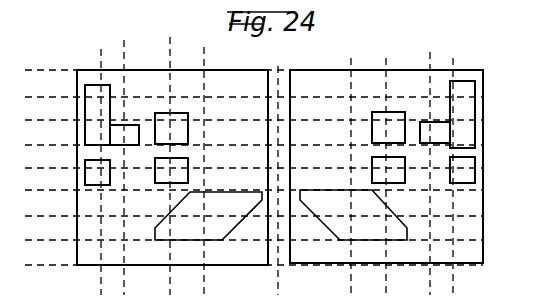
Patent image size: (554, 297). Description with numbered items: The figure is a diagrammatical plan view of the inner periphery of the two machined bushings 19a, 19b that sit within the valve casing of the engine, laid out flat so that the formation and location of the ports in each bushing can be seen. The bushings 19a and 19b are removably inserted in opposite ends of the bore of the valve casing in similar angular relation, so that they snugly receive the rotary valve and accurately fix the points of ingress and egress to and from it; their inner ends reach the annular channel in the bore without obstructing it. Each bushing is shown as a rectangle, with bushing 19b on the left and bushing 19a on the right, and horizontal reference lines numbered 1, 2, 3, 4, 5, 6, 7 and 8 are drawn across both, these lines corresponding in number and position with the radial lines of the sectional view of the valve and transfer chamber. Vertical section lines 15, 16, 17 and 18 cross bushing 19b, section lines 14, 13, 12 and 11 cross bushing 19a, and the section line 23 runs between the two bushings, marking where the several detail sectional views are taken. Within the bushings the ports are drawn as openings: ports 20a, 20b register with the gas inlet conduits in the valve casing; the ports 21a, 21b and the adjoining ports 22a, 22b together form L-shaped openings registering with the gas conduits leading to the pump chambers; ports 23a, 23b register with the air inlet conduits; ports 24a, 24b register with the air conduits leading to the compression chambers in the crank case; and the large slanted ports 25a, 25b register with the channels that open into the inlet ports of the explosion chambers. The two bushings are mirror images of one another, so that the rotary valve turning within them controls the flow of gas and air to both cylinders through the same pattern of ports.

The reference line 1 is at (250, 163).
The reference line 2 is at (250, 92).
The reference line 3 is at (250, 115).
The reference line 4 is at (250, 140).
The reference line 5 is at (250, 163).
The reference line 6 is at (250, 187).
The reference line 7 is at (250, 211).
The reference line 8 is at (250, 236).
The section line 11- 11 is at (453, 170).
The section line 12- 12 is at (431, 166).
The section line 13- 13 is at (384, 170).
The section line 14- 14 is at (346, 170).
The section line 15- 15 is at (95, 165).
The section line 16- 16 is at (125, 160).
The section line 17- 17 is at (170, 159).
The section line 18- 18 is at (200, 164).
The section line 23- 23 is at (276, 174).
The bushing 19a is at (470, 252).
The bushing 19b is at (93, 252).
The port 20a is at (465, 173).
The port 20b is at (93, 172).
The port 21a is at (465, 106).
The port 21b is at (96, 109).
The port 22a is at (437, 135).
The port 22b is at (130, 132).
The port 23a is at (379, 176).
The port 23b is at (180, 178).
The port 24a is at (378, 125).
The port 24b is at (173, 125).
The port 25a is at (343, 226).
The port 25b is at (216, 228).